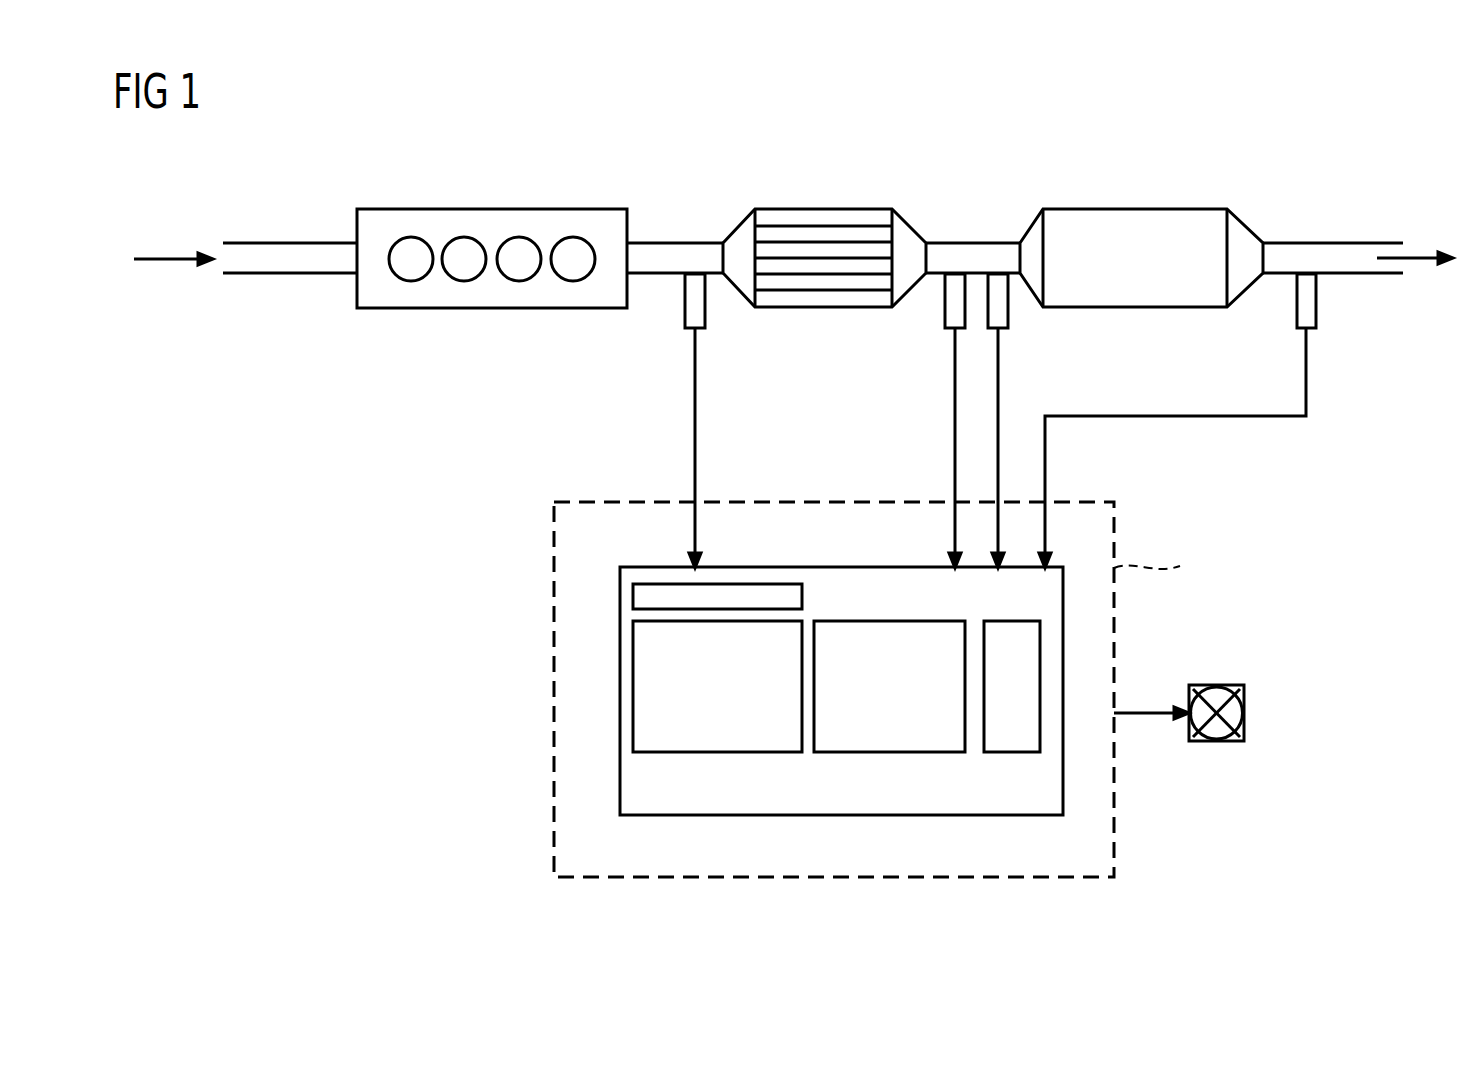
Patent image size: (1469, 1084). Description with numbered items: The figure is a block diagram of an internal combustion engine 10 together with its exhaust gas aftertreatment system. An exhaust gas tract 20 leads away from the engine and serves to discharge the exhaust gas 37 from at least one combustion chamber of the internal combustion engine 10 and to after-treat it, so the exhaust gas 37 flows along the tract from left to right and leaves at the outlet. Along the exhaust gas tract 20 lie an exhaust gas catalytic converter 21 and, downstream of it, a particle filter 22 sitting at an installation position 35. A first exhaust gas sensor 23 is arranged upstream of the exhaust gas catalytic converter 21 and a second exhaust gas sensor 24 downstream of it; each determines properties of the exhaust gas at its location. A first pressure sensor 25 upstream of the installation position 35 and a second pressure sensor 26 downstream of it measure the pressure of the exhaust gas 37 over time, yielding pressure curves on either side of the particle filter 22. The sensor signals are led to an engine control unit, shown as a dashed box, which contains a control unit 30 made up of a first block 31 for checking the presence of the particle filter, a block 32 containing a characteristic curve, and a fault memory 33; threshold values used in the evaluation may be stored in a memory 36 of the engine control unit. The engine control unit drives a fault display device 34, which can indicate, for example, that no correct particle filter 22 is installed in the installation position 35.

The internal combustion engine 10 is at (492, 209).
The exhaust gas tract 20 is at (677, 243).
The exhaust gas catalytic converter 21 is at (823, 209).
The particle filter 22 is at (1133, 209).
The first exhaust gas sensor 23 is at (707, 308).
The second exhaust gas sensor 24 is at (942, 308).
The first pressure sensor 25 is at (1008, 308).
The second pressure sensor 26 is at (1317, 312).
The control unit 30 is at (1064, 646).
The first block 31 is at (716, 752).
The block containing a characteristic curve 32 is at (888, 752).
The fault memory 33 is at (1012, 752).
The fault display device 34 is at (1244, 713).
The installation position 35 is at (1036, 154).
The memory 36 is at (633, 593).
The exhaust gas 37 is at (1422, 253).